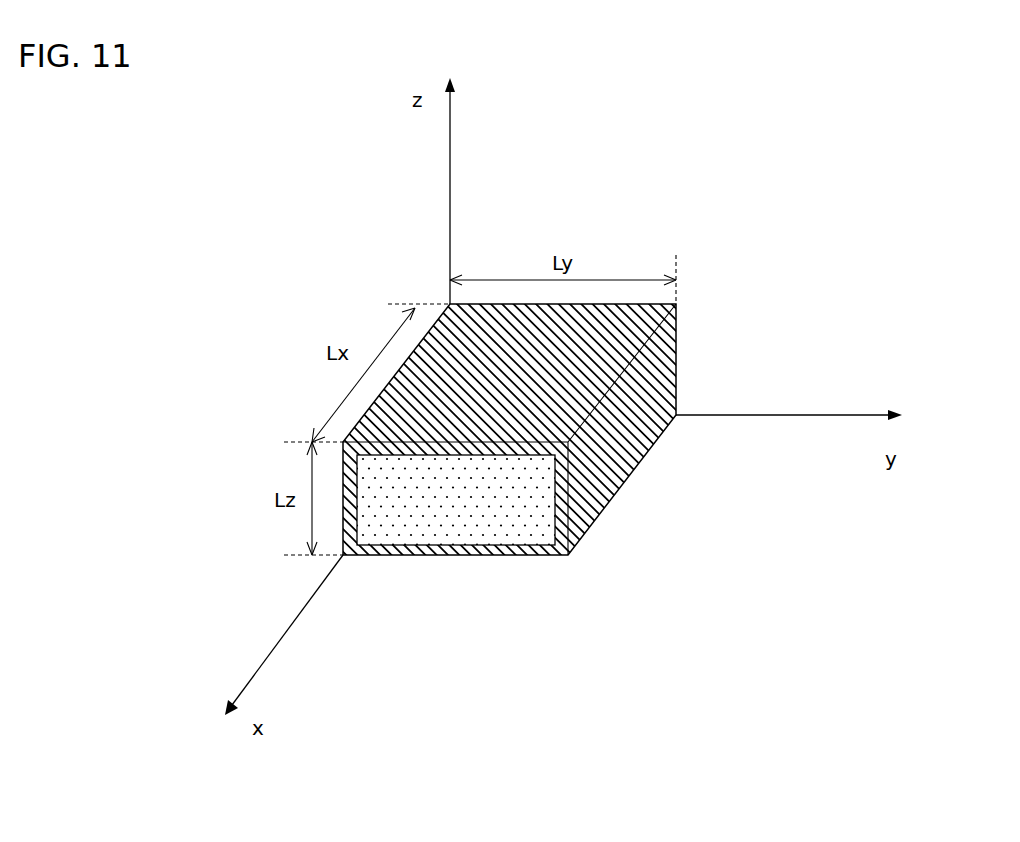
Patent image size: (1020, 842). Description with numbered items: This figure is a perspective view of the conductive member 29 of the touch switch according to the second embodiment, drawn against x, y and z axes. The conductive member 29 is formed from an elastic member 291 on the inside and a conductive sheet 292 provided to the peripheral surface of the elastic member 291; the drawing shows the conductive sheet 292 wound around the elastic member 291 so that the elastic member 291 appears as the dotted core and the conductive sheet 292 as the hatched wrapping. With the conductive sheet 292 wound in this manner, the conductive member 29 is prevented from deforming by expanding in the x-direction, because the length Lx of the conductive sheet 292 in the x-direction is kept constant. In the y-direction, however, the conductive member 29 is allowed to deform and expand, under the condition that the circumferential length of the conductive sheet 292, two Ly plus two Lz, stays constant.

The conductive member 29 is at (630, 228).
The elastic member 291 is at (456, 513).
The conductive sheet 292 is at (652, 446).